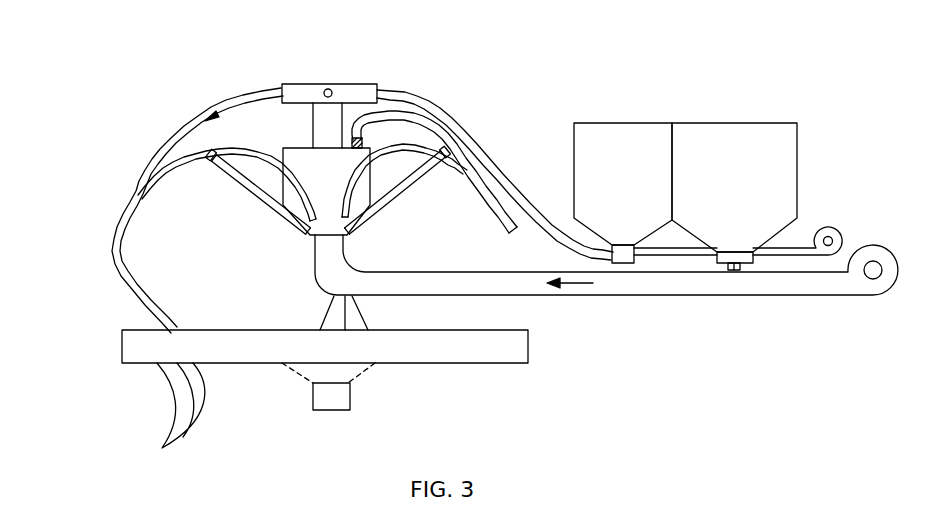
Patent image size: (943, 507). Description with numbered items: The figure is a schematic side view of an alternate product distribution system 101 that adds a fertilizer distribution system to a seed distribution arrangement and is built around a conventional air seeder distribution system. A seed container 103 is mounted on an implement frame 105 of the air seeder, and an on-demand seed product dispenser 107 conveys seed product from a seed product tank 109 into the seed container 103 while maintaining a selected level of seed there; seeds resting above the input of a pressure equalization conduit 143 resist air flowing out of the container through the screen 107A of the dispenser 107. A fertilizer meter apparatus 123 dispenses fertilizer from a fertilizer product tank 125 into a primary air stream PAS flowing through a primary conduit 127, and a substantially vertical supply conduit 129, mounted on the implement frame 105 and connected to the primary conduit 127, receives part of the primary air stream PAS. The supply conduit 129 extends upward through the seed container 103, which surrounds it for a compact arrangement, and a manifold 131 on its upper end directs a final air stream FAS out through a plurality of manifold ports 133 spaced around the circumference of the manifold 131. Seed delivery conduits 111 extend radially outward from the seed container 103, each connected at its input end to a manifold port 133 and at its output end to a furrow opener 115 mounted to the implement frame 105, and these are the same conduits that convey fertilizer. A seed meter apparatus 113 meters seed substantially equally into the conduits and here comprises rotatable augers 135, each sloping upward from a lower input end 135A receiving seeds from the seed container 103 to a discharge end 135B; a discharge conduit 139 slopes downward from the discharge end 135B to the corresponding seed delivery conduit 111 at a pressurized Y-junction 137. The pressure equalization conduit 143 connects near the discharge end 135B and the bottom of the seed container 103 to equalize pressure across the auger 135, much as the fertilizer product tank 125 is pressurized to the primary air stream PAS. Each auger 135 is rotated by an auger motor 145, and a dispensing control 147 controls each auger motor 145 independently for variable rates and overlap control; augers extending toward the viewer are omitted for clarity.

The product distribution system 101 is at (790, 51).
The seed container 103 is at (299, 156).
The implement frame 105 is at (478, 365).
The on-demand seed product dispenser 107 is at (622, 263).
The screen 107A is at (362, 142).
The seed product tank 109 is at (607, 123).
The seed delivery conduit 111 is at (388, 92).
The seed meter apparatus 113 is at (350, 235).
The furrow opener 115 is at (173, 432).
The fertilizer meter apparatus 123 is at (747, 265).
The fertilizer product tank 125 is at (755, 123).
The primary conduit 127 is at (573, 300).
The supply conduit 129 is at (312, 255).
The manifold 131 is at (312, 84).
The manifold port 133 is at (283, 148).
The rotatable auger 135 is at (308, 214).
The lower input end 135A is at (260, 256).
The discharge end 135B is at (217, 168).
The Y-junction 137 is at (136, 185).
The discharge conduit 139 is at (165, 168).
The pressure equalization conduit 143 is at (408, 143).
The auger motor 145 is at (207, 153).
The dispensing control 147 is at (350, 395).
The final air stream FAS is at (225, 103).
The primary air stream PAS is at (582, 287).